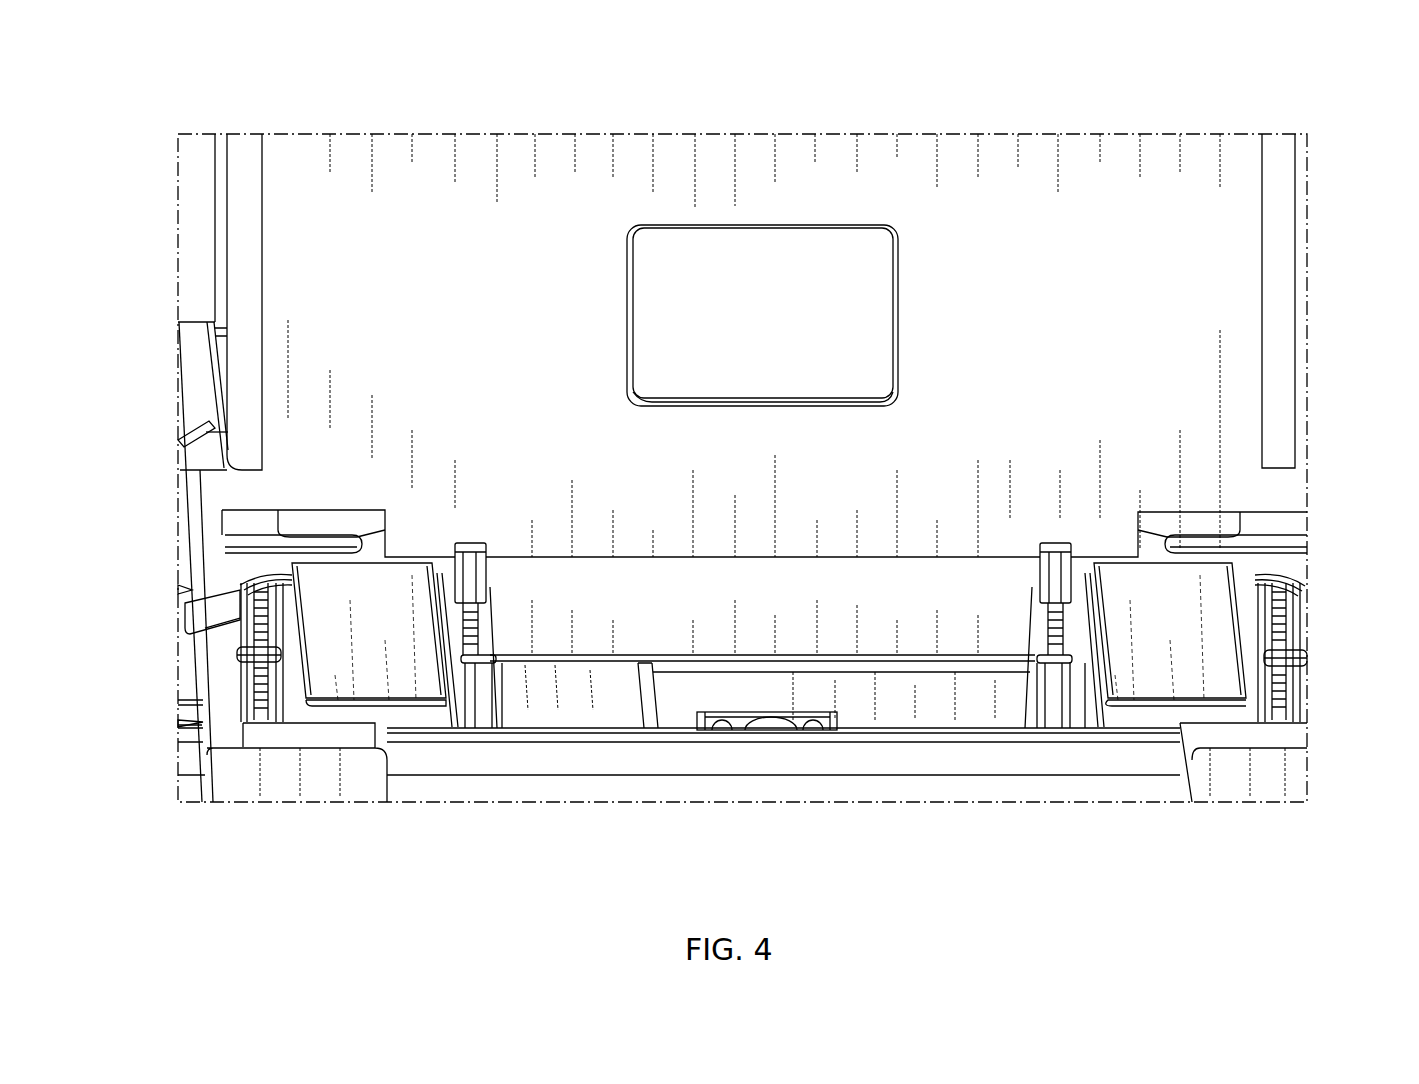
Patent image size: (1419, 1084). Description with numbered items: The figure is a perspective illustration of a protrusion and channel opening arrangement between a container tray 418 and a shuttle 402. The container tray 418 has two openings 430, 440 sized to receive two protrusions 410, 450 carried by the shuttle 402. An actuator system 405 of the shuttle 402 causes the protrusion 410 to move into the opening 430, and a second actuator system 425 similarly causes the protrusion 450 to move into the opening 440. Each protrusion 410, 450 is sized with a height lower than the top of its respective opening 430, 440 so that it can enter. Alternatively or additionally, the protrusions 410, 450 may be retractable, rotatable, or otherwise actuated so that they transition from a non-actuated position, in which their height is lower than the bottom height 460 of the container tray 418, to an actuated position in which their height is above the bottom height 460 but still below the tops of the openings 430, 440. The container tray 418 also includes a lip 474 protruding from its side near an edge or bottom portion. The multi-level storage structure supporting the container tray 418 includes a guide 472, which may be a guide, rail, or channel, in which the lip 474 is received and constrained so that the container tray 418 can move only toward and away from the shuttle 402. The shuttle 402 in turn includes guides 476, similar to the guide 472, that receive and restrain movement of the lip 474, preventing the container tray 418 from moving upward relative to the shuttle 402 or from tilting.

The container tray 418 is at (468, 212).
The shuttle 402 is at (200, 702).
The guide 472 is at (190, 360).
The lip 474 is at (202, 447).
The guides 476 is at (196, 528).
The opening 430 is at (317, 505).
The opening 440 is at (1200, 510).
The protrusion 410 is at (470, 543).
The protrusion 450 is at (1057, 543).
The actuator system 405 is at (265, 598).
The actuator system 425 is at (1278, 600).
The bottom height 460 is at (915, 540).